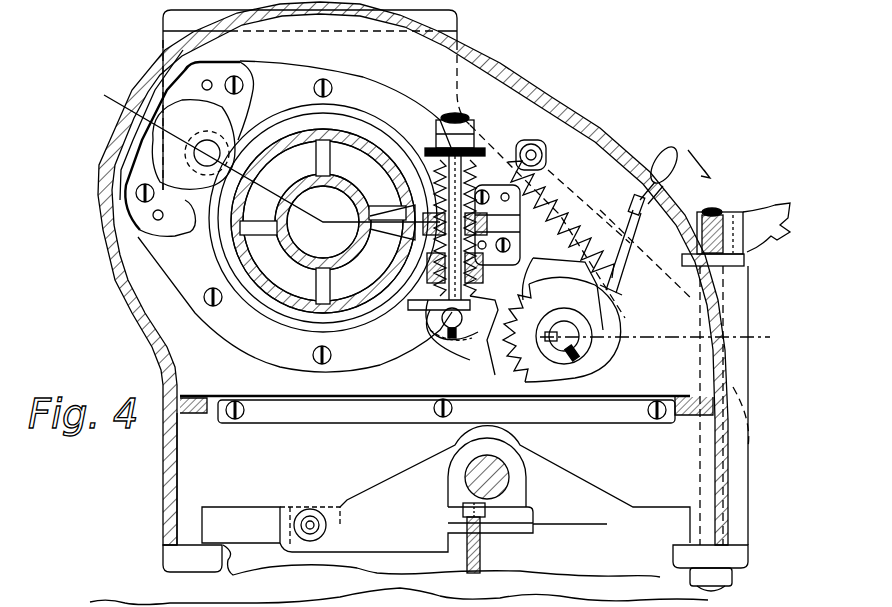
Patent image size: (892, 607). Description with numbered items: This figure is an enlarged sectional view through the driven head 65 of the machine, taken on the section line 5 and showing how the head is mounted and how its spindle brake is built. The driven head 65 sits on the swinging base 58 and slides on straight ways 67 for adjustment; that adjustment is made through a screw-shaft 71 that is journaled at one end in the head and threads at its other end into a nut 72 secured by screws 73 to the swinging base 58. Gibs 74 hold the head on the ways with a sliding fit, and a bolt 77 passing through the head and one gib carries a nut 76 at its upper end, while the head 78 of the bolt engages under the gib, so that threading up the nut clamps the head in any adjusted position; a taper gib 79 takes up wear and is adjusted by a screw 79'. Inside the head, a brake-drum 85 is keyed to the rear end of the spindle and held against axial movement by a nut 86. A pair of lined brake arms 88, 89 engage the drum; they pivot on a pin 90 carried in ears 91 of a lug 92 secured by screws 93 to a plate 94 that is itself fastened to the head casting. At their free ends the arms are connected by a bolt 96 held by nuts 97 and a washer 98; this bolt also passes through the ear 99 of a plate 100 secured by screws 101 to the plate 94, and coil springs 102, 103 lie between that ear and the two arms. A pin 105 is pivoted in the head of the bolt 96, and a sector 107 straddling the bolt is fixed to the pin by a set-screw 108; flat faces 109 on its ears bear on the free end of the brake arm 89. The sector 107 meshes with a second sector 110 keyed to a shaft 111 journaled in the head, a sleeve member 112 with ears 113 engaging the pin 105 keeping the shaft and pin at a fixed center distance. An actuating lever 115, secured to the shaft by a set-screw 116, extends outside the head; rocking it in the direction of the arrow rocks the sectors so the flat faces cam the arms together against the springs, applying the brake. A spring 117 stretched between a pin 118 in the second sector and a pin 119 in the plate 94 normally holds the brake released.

The section line 5- 5 is at (438, 212).
The swinging base 58 is at (575, 487).
The driven head 65 is at (548, 122).
The straight ways 67 is at (235, 512).
The screw-shaft 71 is at (502, 470).
The nut 72 is at (522, 498).
The screws 73 is at (481, 542).
The gibs 74 is at (200, 572).
The nut 76 is at (722, 214).
The bolt 77 is at (712, 450).
The head of the bolt 78 is at (725, 582).
The taper gib 79 is at (310, 513).
The screw 79' is at (316, 508).
The brake-drum 85 is at (290, 330).
The nut 86 is at (323, 222).
The brake arm 88 is at (340, 120).
The brake arm 89 is at (262, 318).
The pin 90 is at (198, 165).
The ears 91 is at (238, 115).
The lug 92 is at (175, 228).
The screws 93 is at (240, 68).
The plate 94 is at (393, 106).
The bolt 96 is at (392, 227).
The nuts 97 is at (468, 130).
The washer 98 is at (486, 145).
The ear 99 is at (512, 225).
The plate 100 is at (510, 214).
The screws 101 is at (472, 232).
The coil spring 102 is at (472, 228).
The coil spring 103 is at (510, 238).
The pin 105 is at (446, 335).
The sector 107 is at (468, 355).
The set-screw 108 is at (454, 342).
The flat faces 109 is at (430, 312).
The second sector 110 is at (540, 372).
The shaft 111 is at (580, 350).
The sleeve member 112 is at (552, 262).
The ears 113 is at (495, 290).
The actuating lever 115 is at (662, 150).
The set-screw 116 is at (592, 370).
The spring 117 is at (585, 208).
The pin 118 is at (622, 290).
The pin 119 is at (535, 146).